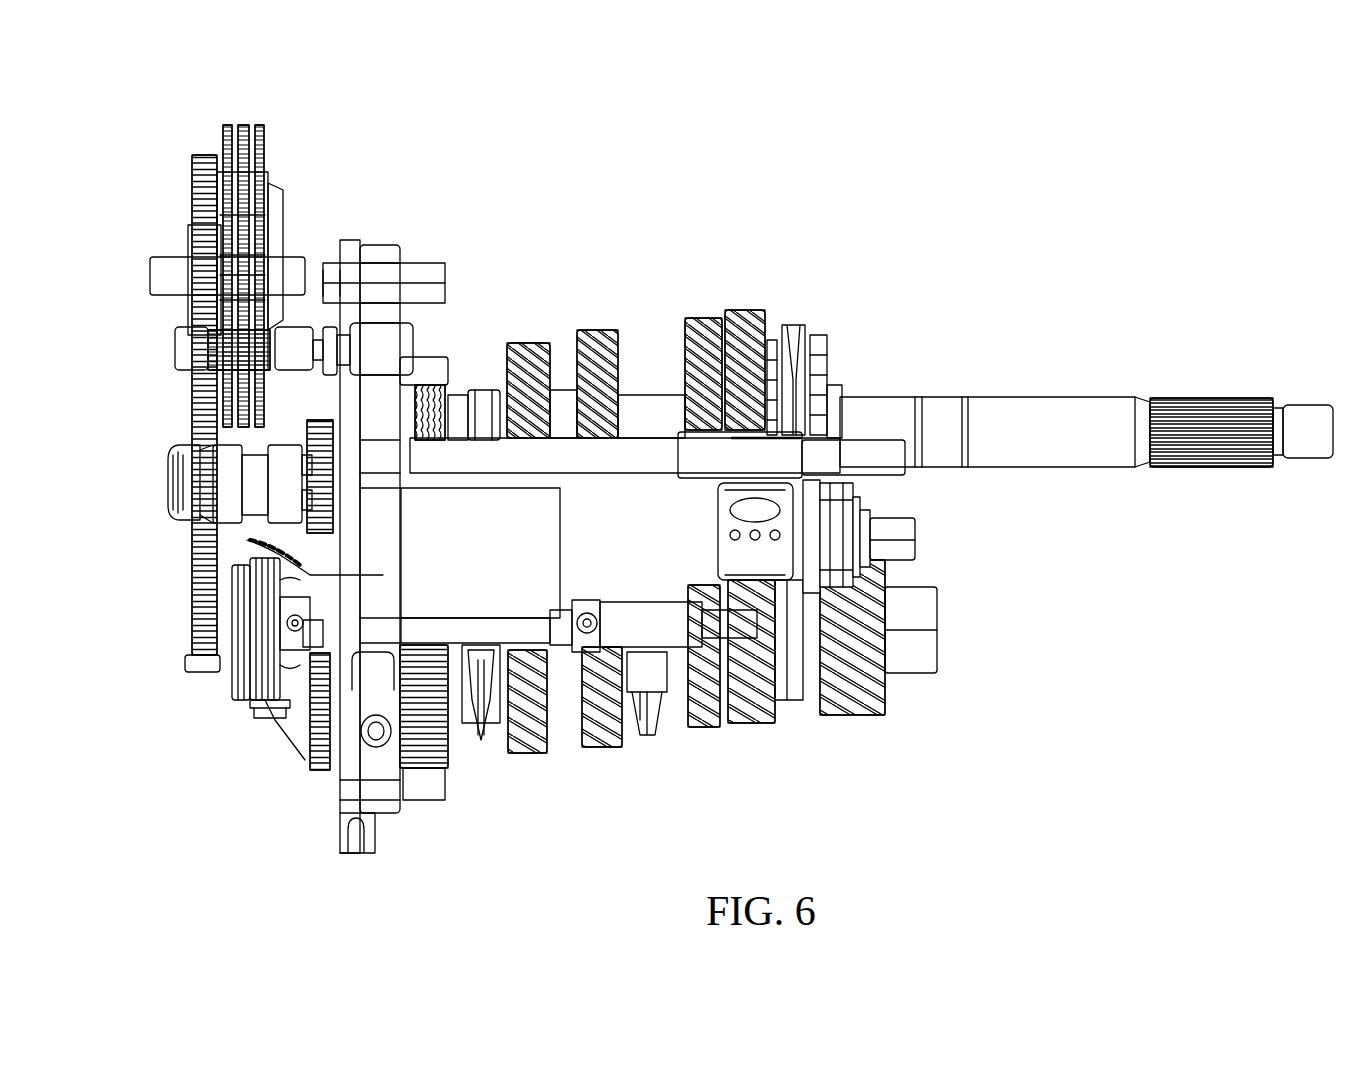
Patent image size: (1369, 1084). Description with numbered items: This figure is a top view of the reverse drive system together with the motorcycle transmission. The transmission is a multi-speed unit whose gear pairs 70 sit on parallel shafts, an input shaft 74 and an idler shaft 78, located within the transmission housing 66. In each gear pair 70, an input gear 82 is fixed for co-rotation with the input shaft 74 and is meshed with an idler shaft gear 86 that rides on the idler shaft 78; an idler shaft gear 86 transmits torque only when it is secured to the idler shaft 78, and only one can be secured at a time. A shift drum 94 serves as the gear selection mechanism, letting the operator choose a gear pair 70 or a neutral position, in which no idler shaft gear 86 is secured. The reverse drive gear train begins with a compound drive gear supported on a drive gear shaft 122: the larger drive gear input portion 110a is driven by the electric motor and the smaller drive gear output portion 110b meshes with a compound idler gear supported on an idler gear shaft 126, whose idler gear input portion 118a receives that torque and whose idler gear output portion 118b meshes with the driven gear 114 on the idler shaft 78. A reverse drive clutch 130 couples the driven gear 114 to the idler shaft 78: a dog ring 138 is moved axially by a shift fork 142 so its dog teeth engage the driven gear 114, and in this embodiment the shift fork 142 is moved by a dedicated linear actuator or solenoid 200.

The transmission housing 66 is at (374, 815).
The gear pairs 70 is at (532, 810).
The input shaft 74 is at (1046, 405).
The idler shaft 78 is at (928, 655).
The input gear 82 is at (445, 358).
The idler shaft gear 86 is at (442, 770).
The shift drum 94 is at (935, 540).
The drive gear input portion 110a is at (262, 125).
The drive gear output portion 110b is at (205, 155).
The driven gear 114 is at (312, 750).
The idler gear input portion 118a is at (215, 615).
The idler gear output portion 118b is at (318, 435).
The drive gear shaft 122 is at (165, 268).
The idler gear shaft 126 is at (175, 493).
The reverse drive clutch 130 is at (248, 742).
The dog ring 138 is at (262, 700).
The shift fork 142 is at (212, 630).
The linear actuator or solenoid 200 is at (255, 540).